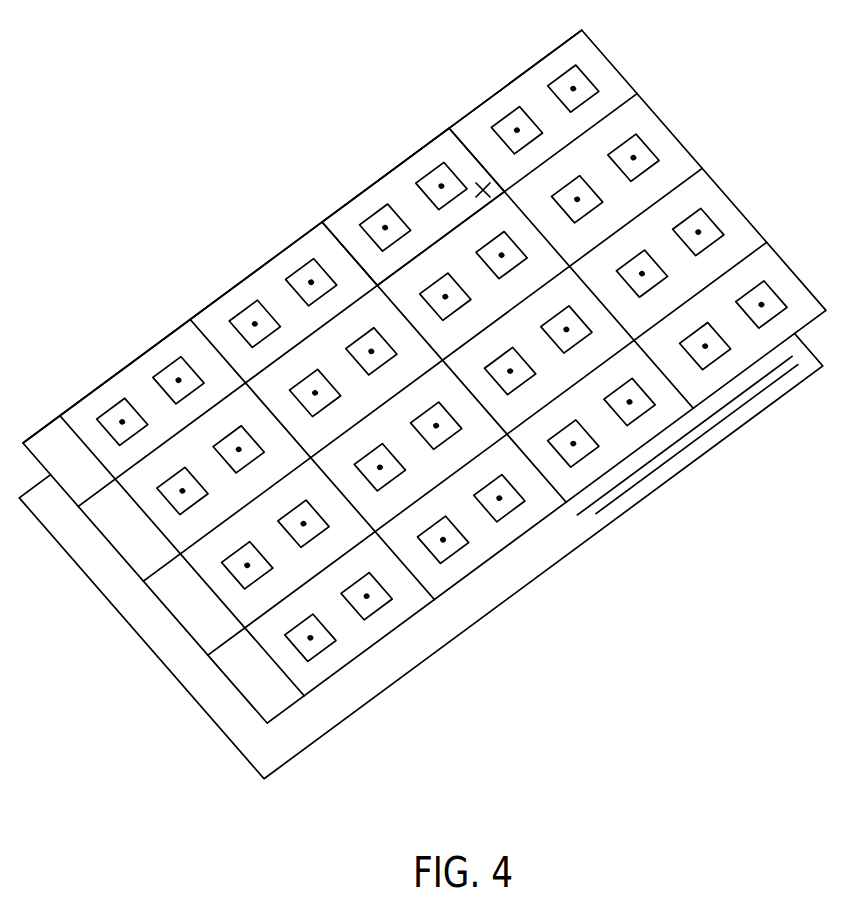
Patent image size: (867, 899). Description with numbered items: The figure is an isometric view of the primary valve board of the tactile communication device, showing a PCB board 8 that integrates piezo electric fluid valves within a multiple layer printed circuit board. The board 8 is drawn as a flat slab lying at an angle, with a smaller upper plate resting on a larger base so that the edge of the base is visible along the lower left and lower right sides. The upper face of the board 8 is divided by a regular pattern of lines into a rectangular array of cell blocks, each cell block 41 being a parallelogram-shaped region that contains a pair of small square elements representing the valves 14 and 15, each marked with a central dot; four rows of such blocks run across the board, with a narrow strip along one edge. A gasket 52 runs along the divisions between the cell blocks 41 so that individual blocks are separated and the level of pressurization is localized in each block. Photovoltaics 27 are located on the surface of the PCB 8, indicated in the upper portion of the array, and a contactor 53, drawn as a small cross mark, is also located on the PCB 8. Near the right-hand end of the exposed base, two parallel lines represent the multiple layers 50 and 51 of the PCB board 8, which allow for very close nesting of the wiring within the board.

The PCB board 8 is at (230, 723).
The valve 14 is at (282, 250).
The valve 15 is at (242, 313).
The photovoltaics 27 is at (397, 182).
The cell block 41 is at (382, 628).
The layer 50 is at (587, 512).
The layer 51 is at (613, 510).
The gasket 52 is at (390, 273).
The contactor 53 is at (482, 182).